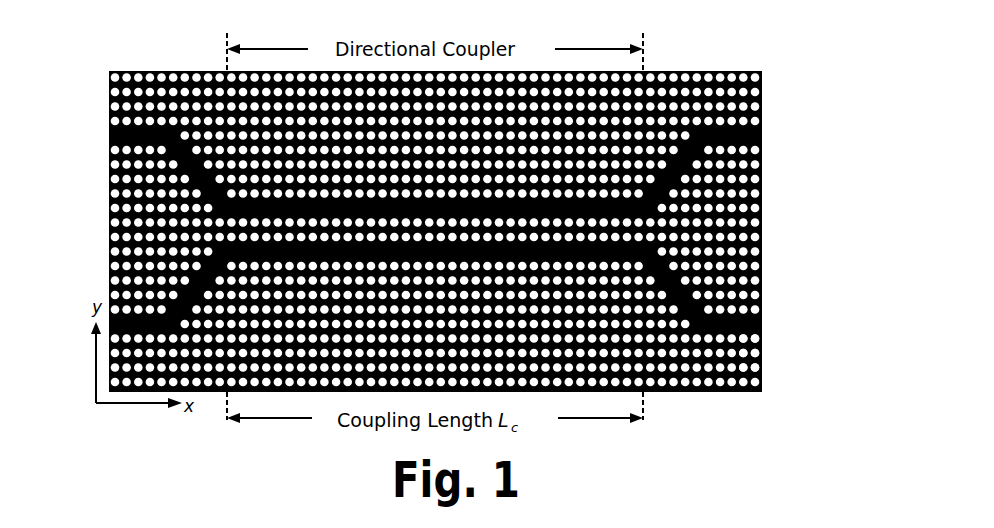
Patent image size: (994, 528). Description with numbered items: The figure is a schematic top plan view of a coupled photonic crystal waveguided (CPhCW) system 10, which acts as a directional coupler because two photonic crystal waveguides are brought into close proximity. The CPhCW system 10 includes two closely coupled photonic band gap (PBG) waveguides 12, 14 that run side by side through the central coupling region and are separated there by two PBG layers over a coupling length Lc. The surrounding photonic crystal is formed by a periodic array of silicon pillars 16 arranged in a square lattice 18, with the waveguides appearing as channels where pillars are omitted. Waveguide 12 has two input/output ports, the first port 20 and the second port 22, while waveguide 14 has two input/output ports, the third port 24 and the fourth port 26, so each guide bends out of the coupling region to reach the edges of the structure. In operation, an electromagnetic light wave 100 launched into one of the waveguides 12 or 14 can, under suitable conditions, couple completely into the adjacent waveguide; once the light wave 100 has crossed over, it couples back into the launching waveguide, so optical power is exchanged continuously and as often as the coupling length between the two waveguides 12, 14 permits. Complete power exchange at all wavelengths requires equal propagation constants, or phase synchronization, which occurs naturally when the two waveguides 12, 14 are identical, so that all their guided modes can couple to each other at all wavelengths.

The coupled photonic crystal waveguided (CPhCW) system 10 is at (756, 58).
The PBG waveguide 12 is at (735, 282).
The PBG waveguide 14 is at (740, 193).
The silicon pillars 16 is at (187, 72).
The square lattice 18 is at (768, 372).
The Port 1 20 is at (110, 336).
The Port 2 22 is at (762, 315).
The Port 3 24 is at (762, 132).
The Port 4 26 is at (108, 138).
The electromagnetic light wave 100 is at (85, 326).